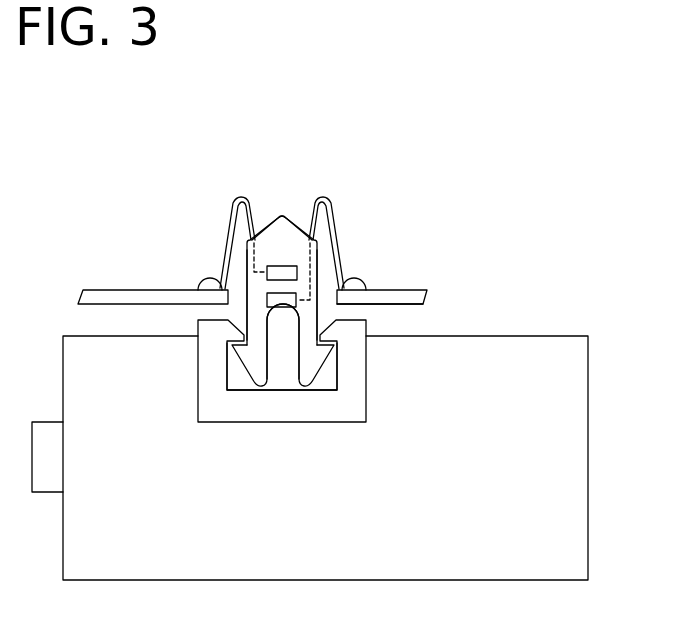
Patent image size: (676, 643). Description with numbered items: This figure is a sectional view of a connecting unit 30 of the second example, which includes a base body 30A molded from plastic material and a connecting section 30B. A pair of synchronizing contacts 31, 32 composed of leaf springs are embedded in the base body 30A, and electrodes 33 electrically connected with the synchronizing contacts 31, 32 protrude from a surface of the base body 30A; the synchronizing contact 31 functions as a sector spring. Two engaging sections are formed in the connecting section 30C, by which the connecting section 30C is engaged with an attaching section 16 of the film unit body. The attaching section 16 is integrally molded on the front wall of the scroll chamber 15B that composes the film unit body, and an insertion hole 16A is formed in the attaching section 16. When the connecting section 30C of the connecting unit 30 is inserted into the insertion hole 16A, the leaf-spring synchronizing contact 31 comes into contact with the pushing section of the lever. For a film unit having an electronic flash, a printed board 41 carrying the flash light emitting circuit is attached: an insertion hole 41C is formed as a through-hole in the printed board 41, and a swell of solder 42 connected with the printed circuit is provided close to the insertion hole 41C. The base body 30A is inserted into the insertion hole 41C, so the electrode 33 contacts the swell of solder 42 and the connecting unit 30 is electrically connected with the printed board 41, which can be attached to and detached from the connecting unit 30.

The scroll chamber 15B is at (75, 335).
The attaching section 16 is at (197, 410).
The insertion hole 16A is at (245, 389).
The connecting unit 30 is at (234, 156).
The base body 30A is at (283, 216).
The connecting section 30B is at (361, 259).
The connecting section 30C is at (312, 362).
The synchronizing contact 31 is at (283, 307).
The synchronizing contact 32 is at (282, 266).
The electrodes 33 is at (240, 197).
The printed board 41 is at (402, 289).
The insertion hole 41C is at (328, 303).
The swell of solder 42 is at (210, 277).